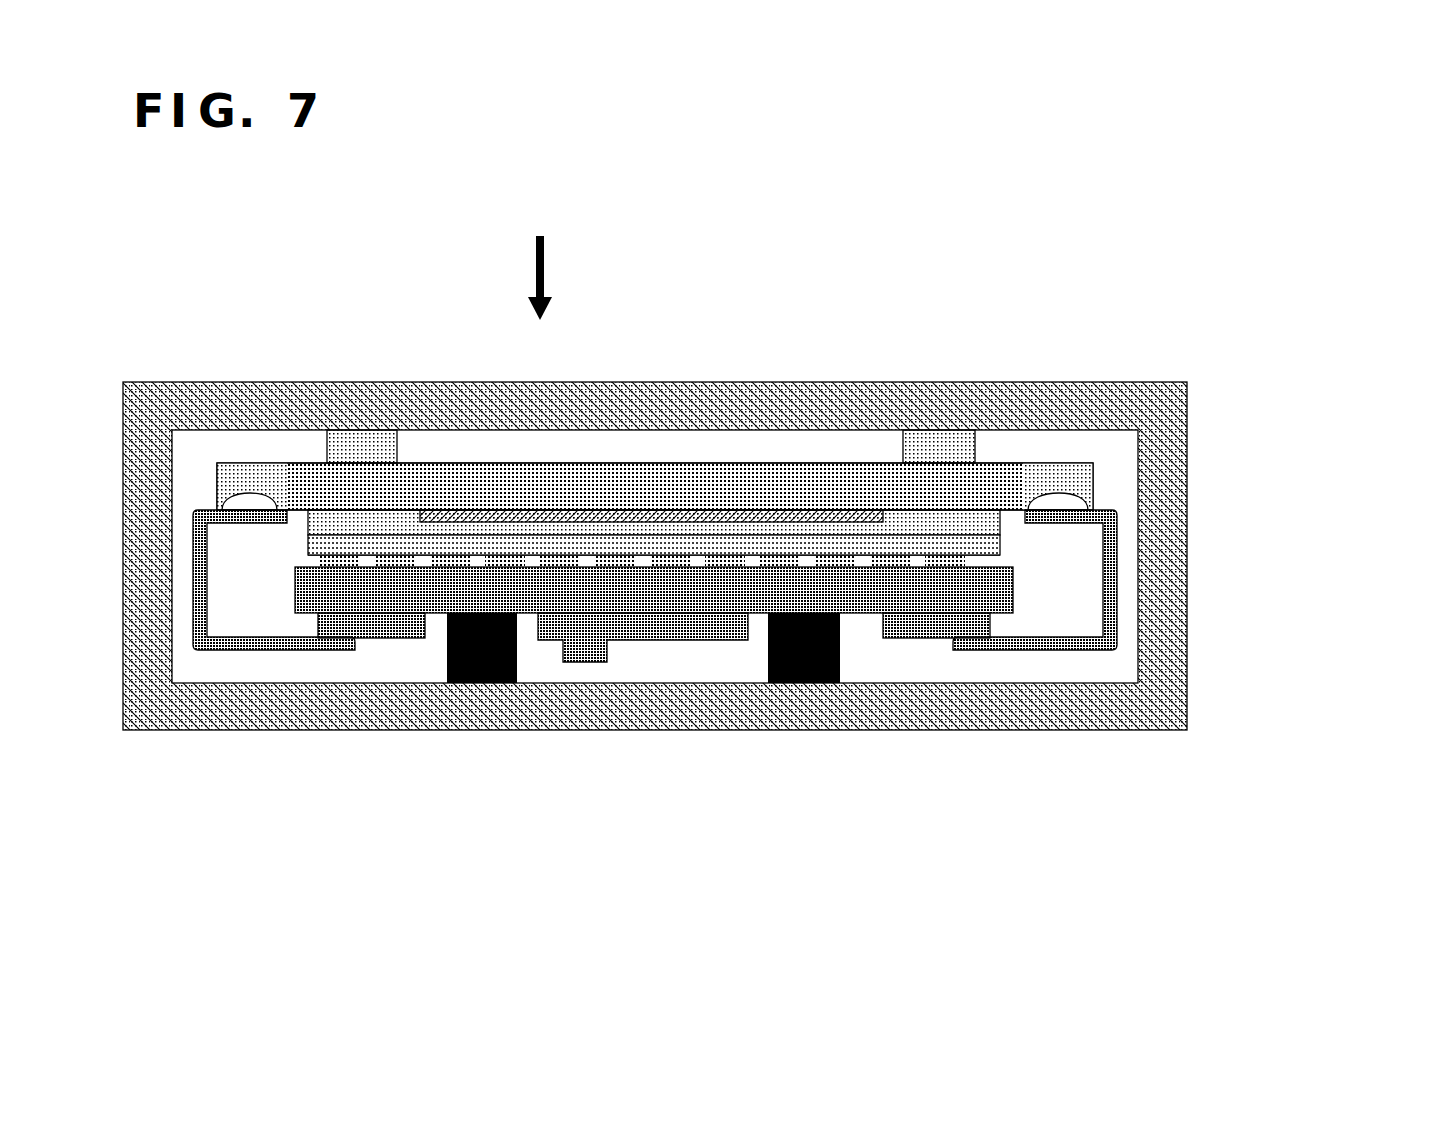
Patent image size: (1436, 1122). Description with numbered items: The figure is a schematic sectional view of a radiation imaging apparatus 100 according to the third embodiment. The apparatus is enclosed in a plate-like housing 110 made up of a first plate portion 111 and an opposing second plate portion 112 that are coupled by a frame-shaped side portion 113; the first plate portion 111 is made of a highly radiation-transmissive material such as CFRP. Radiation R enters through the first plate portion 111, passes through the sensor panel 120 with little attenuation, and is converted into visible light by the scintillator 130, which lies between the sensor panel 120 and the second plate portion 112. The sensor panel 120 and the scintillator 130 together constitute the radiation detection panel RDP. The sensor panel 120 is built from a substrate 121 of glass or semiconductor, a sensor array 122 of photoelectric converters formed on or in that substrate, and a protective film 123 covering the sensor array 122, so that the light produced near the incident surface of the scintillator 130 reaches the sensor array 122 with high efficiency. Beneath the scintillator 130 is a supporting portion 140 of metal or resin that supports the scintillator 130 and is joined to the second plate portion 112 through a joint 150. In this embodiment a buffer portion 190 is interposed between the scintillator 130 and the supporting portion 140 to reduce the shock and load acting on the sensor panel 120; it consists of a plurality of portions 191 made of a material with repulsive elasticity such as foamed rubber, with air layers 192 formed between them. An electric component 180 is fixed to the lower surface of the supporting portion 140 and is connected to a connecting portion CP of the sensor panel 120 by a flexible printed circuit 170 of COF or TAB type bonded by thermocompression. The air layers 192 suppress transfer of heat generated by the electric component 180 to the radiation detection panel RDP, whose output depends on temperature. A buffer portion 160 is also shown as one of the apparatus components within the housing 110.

The radiation imaging apparatus 100 is at (638, 772).
The housing 110 is at (765, 544).
The first plate portion 111 is at (1082, 402).
The second plate portion 112 is at (1110, 703).
The side portion 113 is at (1167, 560).
The sensor panel 120 is at (654, 391).
The substrate 121 is at (543, 487).
The sensor array 122 is at (583, 530).
The protective film 123 is at (608, 505).
The scintillator 130 is at (735, 547).
The supporting portion 140 is at (1082, 405).
The joint 150 is at (483, 613).
The buffer portion 160 is at (367, 450).
The flexible printed circuit 170 is at (247, 523).
The electric component 180 is at (375, 638).
The buffer portion 190 is at (654, 716).
The portions 191 is at (320, 617).
The air layers 192 is at (410, 590).
The connecting portion CP is at (655, 486).
The radiation R is at (532, 278).
The radiation detection panel RDP is at (654, 391).